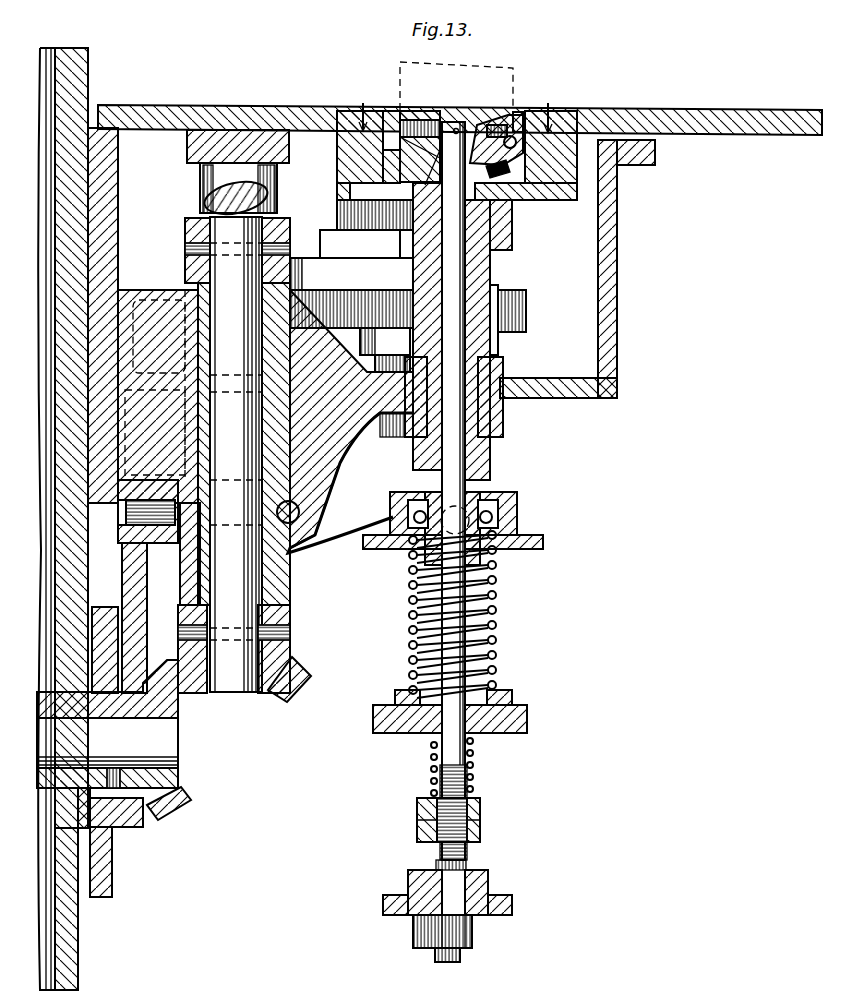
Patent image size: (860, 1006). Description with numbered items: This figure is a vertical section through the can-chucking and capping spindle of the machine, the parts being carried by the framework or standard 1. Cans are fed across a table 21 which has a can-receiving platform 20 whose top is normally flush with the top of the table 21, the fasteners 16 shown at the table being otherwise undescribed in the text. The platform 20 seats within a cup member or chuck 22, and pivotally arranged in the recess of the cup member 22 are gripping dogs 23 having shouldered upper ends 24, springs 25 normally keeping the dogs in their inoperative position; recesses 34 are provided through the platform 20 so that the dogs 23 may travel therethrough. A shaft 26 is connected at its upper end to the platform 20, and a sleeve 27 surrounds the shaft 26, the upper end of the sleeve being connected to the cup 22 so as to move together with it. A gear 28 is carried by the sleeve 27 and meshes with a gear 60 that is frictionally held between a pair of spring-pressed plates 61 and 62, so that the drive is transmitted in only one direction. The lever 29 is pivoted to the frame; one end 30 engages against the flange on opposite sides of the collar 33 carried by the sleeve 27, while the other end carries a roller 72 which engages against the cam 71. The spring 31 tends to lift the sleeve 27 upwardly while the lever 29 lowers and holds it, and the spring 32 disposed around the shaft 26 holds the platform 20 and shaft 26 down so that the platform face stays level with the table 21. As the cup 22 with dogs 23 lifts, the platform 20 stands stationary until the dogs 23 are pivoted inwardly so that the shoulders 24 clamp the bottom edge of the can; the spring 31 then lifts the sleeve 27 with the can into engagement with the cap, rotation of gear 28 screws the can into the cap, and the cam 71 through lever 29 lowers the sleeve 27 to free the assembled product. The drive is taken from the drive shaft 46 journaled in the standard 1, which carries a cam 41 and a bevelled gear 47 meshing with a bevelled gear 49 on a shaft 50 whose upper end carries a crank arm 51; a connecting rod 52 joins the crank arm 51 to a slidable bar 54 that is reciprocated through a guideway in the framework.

The framework or standard 1 is at (72, 980).
The screws 16 is at (455, 108).
The can-receiving platform 20 is at (411, 113).
The table 21 is at (655, 114).
The cup member or chuck 22 is at (387, 157).
The gripping dogs 23 is at (522, 114).
The shouldered upper ends 24 is at (512, 118).
The springs 25 is at (500, 180).
The shaft 26 is at (442, 640).
The sleeve 27 is at (490, 456).
The gear 28 is at (503, 352).
The lever 29 is at (342, 522).
The end of lever 30 is at (500, 556).
The spring 31 is at (410, 666).
The spring 32 is at (435, 781).
The collar 33 is at (522, 523).
The recesses 34 is at (506, 114).
The cam 41 is at (113, 882).
The drive shaft 46 is at (178, 775).
The bevelled gear 47 is at (186, 806).
The bevelled gear 49 is at (300, 696).
The shaft 50 is at (245, 690).
The crank arm 51 is at (192, 270).
The connecting rod 52 is at (222, 184).
The slidable bar 54 is at (190, 135).
The gear 60 is at (520, 307).
The spring-pressed plate 61 is at (350, 332).
The spring-pressed plate 62 is at (297, 272).
The cam 71 is at (137, 830).
The roller 72 is at (120, 545).